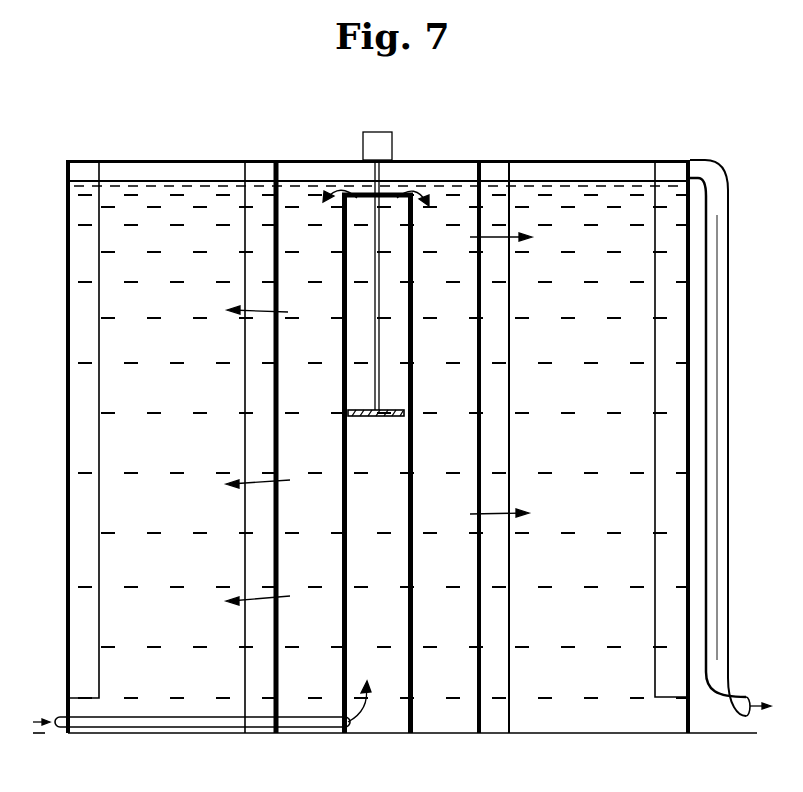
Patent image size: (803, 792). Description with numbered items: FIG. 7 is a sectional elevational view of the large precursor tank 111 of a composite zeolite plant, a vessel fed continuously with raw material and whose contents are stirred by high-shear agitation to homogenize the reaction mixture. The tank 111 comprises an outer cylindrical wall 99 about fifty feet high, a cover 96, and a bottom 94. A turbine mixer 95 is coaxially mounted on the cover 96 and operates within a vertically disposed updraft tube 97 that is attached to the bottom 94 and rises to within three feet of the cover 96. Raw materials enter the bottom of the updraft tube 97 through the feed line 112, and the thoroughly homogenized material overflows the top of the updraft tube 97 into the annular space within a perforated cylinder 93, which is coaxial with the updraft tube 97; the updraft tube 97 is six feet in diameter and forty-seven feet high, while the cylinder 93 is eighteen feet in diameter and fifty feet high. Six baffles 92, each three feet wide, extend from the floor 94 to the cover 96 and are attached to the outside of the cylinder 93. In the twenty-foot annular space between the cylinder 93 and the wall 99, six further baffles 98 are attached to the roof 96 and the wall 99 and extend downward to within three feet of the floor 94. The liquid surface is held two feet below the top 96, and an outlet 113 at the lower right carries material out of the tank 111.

The baffle 92 is at (247, 443).
The perforated cylinder 93 is at (276, 370).
The bottom 94 is at (600, 732).
The turbine mixer 95 is at (392, 134).
The cover 96 is at (598, 160).
The updraft tube 97 is at (412, 563).
The baffle 98 is at (97, 497).
The outer cylindrical wall 99 is at (66, 548).
The precursor tank 111 is at (665, 133).
The feed line 112 is at (60, 716).
The outlet pipe 113 is at (735, 693).